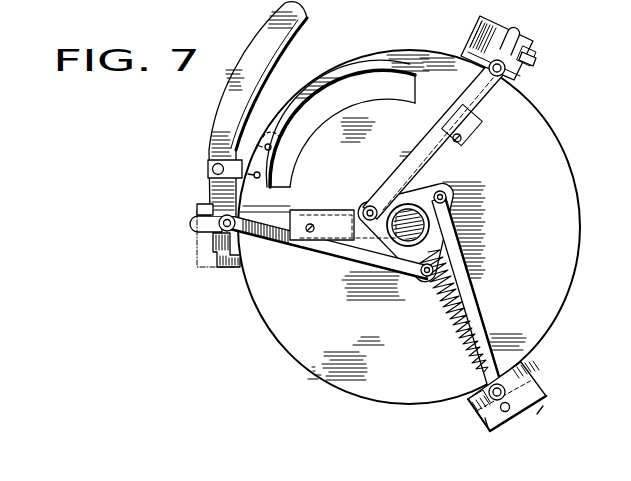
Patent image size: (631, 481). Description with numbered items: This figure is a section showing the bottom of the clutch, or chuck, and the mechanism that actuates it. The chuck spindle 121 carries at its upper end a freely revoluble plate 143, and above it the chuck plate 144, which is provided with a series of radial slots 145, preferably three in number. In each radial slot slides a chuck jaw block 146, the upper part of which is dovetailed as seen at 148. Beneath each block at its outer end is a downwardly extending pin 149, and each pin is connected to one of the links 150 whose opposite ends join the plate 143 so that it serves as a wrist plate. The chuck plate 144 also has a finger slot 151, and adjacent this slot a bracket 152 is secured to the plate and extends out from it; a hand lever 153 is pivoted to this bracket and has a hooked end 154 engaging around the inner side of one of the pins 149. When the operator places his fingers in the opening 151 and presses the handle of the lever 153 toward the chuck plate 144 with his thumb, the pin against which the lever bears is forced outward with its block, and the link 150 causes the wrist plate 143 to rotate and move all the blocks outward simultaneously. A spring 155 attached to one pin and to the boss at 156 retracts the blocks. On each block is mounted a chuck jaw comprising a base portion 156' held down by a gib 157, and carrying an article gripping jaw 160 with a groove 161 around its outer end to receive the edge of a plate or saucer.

The chuck spindle 121 is at (414, 208).
The plate 143 is at (463, 220).
The chuck plate 144 is at (290, 350).
The radial slots 145 is at (500, 112).
The chuck jaw block 146 is at (533, 62).
The dovetailed upper part of block 148 is at (486, 423).
The pin 149 is at (220, 236).
The links 150 is at (432, 152).
The finger slot 151 is at (331, 123).
The bracket 152 is at (231, 160).
The hand lever 153 is at (268, 42).
The hooked end 154 is at (198, 208).
The spring 155 is at (454, 311).
The spring attachment point 156 is at (398, 219).
The base portion 156' is at (511, 256).
The gib 157 is at (540, 408).
The article gripping jaw 160 is at (530, 56).
The groove 161 is at (514, 36).